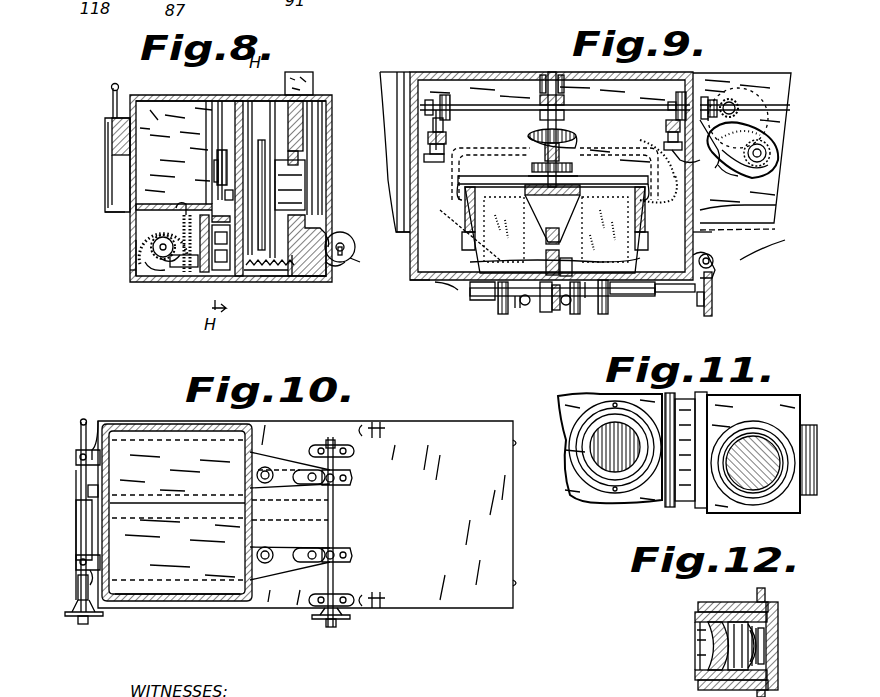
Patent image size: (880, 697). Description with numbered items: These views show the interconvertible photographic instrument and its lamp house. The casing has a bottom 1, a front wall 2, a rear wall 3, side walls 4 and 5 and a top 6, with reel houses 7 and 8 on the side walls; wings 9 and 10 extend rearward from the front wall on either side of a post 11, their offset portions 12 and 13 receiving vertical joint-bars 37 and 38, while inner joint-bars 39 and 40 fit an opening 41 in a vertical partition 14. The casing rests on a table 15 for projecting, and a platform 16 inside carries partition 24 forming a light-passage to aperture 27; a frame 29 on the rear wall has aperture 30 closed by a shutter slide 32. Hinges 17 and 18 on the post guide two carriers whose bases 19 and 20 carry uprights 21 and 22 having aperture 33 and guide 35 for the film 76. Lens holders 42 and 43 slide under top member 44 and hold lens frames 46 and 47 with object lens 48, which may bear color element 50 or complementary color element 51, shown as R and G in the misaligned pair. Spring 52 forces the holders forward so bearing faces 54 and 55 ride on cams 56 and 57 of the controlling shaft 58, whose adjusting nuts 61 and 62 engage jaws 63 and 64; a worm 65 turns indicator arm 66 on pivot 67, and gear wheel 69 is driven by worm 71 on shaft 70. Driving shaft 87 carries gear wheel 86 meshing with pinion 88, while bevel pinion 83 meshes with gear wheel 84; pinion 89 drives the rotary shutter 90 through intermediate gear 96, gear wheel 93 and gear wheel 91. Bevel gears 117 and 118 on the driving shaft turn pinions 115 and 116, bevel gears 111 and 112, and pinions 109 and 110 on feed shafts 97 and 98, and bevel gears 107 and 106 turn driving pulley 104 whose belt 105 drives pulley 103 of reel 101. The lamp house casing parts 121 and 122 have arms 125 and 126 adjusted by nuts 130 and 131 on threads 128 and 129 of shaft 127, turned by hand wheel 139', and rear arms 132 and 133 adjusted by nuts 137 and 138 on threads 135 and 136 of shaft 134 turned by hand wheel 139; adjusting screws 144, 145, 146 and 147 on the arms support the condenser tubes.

In FIG. 8, the bottom 1 is at (140, 281).
In FIG. 9, the front wall 2 is at (440, 281).
In FIG. 8, the rear wall 3 is at (133, 262).
In FIG. 9, the rear wall 3 is at (483, 72).
In FIG. 9, the side wall 4 is at (700, 239).
In FIG. 9, the side wall 5 is at (410, 74).
In FIG. 8, the top 6 is at (175, 101).
In FIG. 9, the reel house 7 is at (755, 207).
In FIG. 9, the reel house 8 is at (410, 72).
In FIG. 9, the wing 9 is at (640, 296).
In FIG. 8, the wing 10 is at (323, 177).
In FIG. 9, the wing 10 is at (495, 260).
In FIG. 9, the post 11 is at (552, 228).
In FIG. 9, the vertical offset portion 12 is at (640, 254).
In FIG. 9, the vertical offset portion 13 is at (490, 268).
In FIG. 8, the vertical partition 14 is at (318, 140).
In FIG. 9, the vertical partition 14 is at (475, 292).
In FIG. 11, the vertical partition 14 is at (684, 501).
In FIG. 10, the table 15 is at (448, 608).
In FIG. 8, the platform 16 is at (150, 205).
In FIG. 9, the platform 16 is at (512, 88).
In FIG. 9, the hinge 17 is at (590, 175).
In FIG. 9, the hinge 18 is at (538, 178).
In FIG. 8, the base 19 is at (270, 282).
In FIG. 9, the base 19 is at (760, 238).
In FIG. 9, the base 20 is at (410, 231).
In FIG. 8, the upright 21 is at (239, 101).
In FIG. 9, the upright 21 is at (640, 185).
In FIG. 9, the upright 22 is at (520, 188).
In FIG. 8, the partition 24 is at (158, 120).
In FIG. 8, the aperture 27 is at (110, 160).
In FIG. 8, the frame 29 is at (112, 122).
In FIG. 8, the aperture 30 is at (130, 207).
In FIG. 8, the shutter slide 32 is at (108, 162).
In FIG. 8, the aperture 33 is at (232, 160).
In FIG. 8, the guide 35 is at (214, 174).
In FIG. 9, the joint-bar 37 is at (610, 300).
In FIG. 11, the joint-bar 37 is at (563, 410).
In FIG. 9, the joint-bar 38 is at (452, 285).
In FIG. 11, the joint-bar 38 is at (810, 496).
In FIG. 9, the joint-bar 39 is at (640, 225).
In FIG. 11, the joint-bar 39 is at (667, 402).
In FIG. 9, the joint-bar 40 is at (470, 225).
In FIG. 11, the joint-bar 40 is at (700, 508).
In FIG. 9, the opening 41 is at (535, 250).
In FIG. 8, the lens holder 42 is at (305, 282).
In FIG. 11, the lens holder 42 is at (635, 494).
In FIG. 11, the lens holder 43 is at (768, 412).
In FIG. 8, the top member 44 is at (303, 126).
In FIG. 8, the lens frame 46 is at (305, 168).
In FIG. 11, the lens frame 46 is at (598, 418).
In FIG. 12, the lens frame 46 is at (765, 605).
In FIG. 11, the lens frame 47 is at (738, 430).
In FIG. 12, the object lens 48 is at (708, 647).
In FIG. 11, the color element 50 is at (608, 472).
In FIG. 12, the color element 50 is at (762, 652).
In FIG. 11, the complementary color element 51 is at (762, 492).
In FIG. 8, the spring 52 is at (244, 282).
In FIG. 8, the beveled bearing face 54 is at (342, 262).
In FIG. 9, the beveled bearing face 54 is at (578, 314).
In FIG. 9, the beveled bearing face 55 is at (517, 308).
In FIG. 8, the cam 56 is at (348, 237).
In FIG. 9, the cam 56 is at (585, 300).
In FIG. 9, the cam 57 is at (503, 314).
In FIG. 8, the operating and controlling shaft 58 is at (352, 251).
In FIG. 9, the operating and controlling shaft 58 is at (668, 294).
In FIG. 9, the adjusting nut 61 is at (566, 306).
In FIG. 9, the adjusting nut 62 is at (527, 306).
In FIG. 9, the jaw 63 is at (560, 293).
In FIG. 9, the jaw 64 is at (556, 312).
In FIG. 9, the worm 65 is at (546, 312).
In FIG. 8, the indicator arm 66 is at (329, 95).
In FIG. 9, the indicator arm 66 is at (776, 206).
In FIG. 8, the pivot 67 is at (322, 234).
In FIG. 9, the gear wheel 69 is at (712, 315).
In FIG. 9, the shaft 70 is at (714, 262).
In FIG. 9, the worm 71 is at (714, 275).
In FIG. 8, the film 76 is at (225, 192).
In FIG. 8, the bevel pinion 83 is at (175, 220).
In FIG. 9, the bevel pinion 83 is at (558, 145).
In FIG. 8, the gear wheel 84 is at (196, 282).
In FIG. 9, the gear wheel 84 is at (532, 136).
In FIG. 8, the gear wheel 86 is at (132, 276).
In FIG. 9, the gear wheel 86 is at (552, 85).
In FIG. 8, the driving shaft 87 is at (150, 246).
In FIG. 9, the driving shaft 87 is at (496, 105).
In FIG. 8, the pinion 88 is at (176, 282).
In FIG. 9, the pinion 88 is at (560, 120).
In FIG. 8, the pinion 89 is at (228, 282).
In FIG. 9, the pinion 89 is at (585, 175).
In FIG. 8, the rotary shutter 90 is at (266, 138).
In FIG. 8, the gear wheel 91 is at (251, 101).
In FIG. 8, the gear wheel 93 is at (292, 282).
In FIG. 9, the intermediate gear wheel 96 is at (548, 165).
In FIG. 9, the shaft 97 is at (697, 168).
In FIG. 8, the shaft 98 is at (142, 236).
In FIG. 9, the shaft 98 is at (451, 166).
In FIG. 9, the reel 101 is at (765, 172).
In FIG. 9, the pulley 103 is at (770, 153).
In FIG. 9, the driving pulley 104 is at (775, 105).
In FIG. 9, the belt 105 is at (772, 131).
In FIG. 9, the bevel gear wheel 106 is at (732, 98).
In FIG. 9, the bevel gear wheel 107 is at (712, 97).
In FIG. 9, the bevel pinion 109 is at (730, 178).
In FIG. 9, the bevel pinion 110 is at (428, 145).
In FIG. 9, the bevel gear wheel 111 is at (692, 164).
In FIG. 9, the bevel gear wheel 112 is at (444, 156).
In FIG. 9, the bevel pinion 115 is at (666, 127).
In FIG. 9, the bevel pinion 116 is at (433, 125).
In FIG. 9, the bevel gear wheel 117 is at (680, 92).
In FIG. 9, the bevel gear wheel 118 is at (445, 95).
In FIG. 10, the casing part 121 is at (165, 575).
In FIG. 10, the casing part 122 is at (145, 445).
In FIG. 10, the arm 125 is at (295, 565).
In FIG. 10, the arm 126 is at (290, 465).
In FIG. 10, the shaft 127 is at (334, 521).
In FIG. 10, the screw thread 128 is at (333, 570).
In FIG. 10, the screw thread 129 is at (352, 501).
In FIG. 10, the adjusting nut 130 is at (352, 552).
In FIG. 10, the adjusting nut 131 is at (352, 475).
In FIG. 10, the arm 132 is at (80, 584).
In FIG. 10, the arm 133 is at (97, 440).
In FIG. 10, the shaft 134 is at (76, 526).
In FIG. 10, the screw thread 135 is at (88, 575).
In FIG. 10, the screw thread 136 is at (80, 424).
In FIG. 10, the adjusting nut 137 is at (78, 557).
In FIG. 10, the adjusting nut 138 is at (80, 452).
In FIG. 10, the hand wheel 139 is at (90, 622).
In FIG. 10, the hand wheel 139' is at (347, 629).
In FIG. 10, the adjusting screw 144 is at (270, 485).
In FIG. 10, the adjusting screw 145 is at (272, 480).
In FIG. 10, the adjusting screw 146 is at (352, 556).
In FIG. 10, the adjusting screw 147 is at (372, 464).
In FIG. 11, the red lens R is at (590, 455).
In FIG. 12, the red lens R is at (762, 664).
In FIG. 11, the green lens G is at (768, 442).